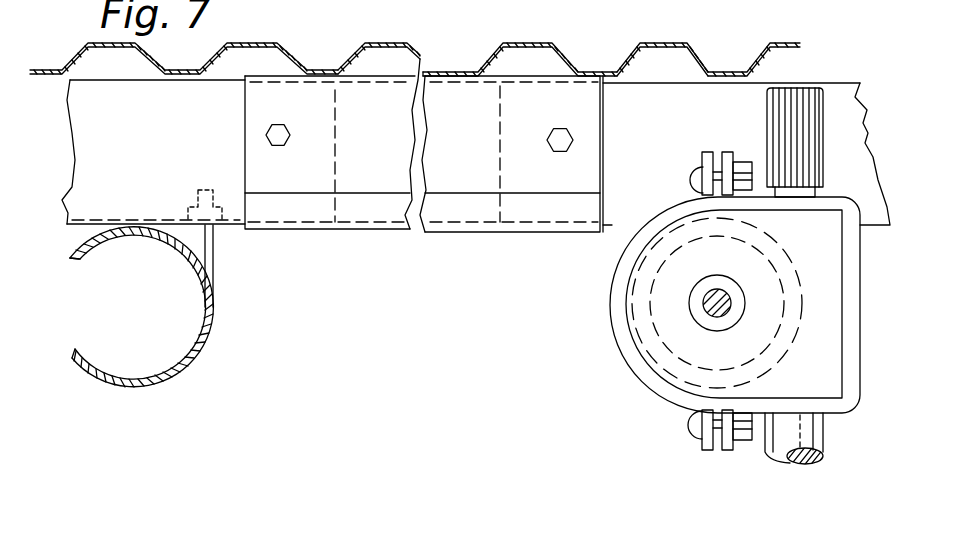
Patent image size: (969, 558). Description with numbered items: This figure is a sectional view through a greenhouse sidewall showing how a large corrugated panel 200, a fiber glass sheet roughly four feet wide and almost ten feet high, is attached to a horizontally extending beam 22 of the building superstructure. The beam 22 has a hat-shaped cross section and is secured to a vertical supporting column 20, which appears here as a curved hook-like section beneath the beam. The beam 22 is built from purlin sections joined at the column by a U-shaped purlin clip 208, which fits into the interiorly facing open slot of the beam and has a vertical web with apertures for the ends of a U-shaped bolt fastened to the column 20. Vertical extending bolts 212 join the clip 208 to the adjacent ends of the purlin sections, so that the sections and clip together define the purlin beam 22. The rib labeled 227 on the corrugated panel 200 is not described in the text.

The vertical supporting column 20 is at (200, 288).
The horizontally extending beam 22 is at (150, 151).
The corrugated panel 200 is at (648, 40).
The U-shaped purlin clip 208 is at (500, 3).
The vertical extending bolt 212 is at (379, 37).
The deck rib flange 227 is at (686, 76).